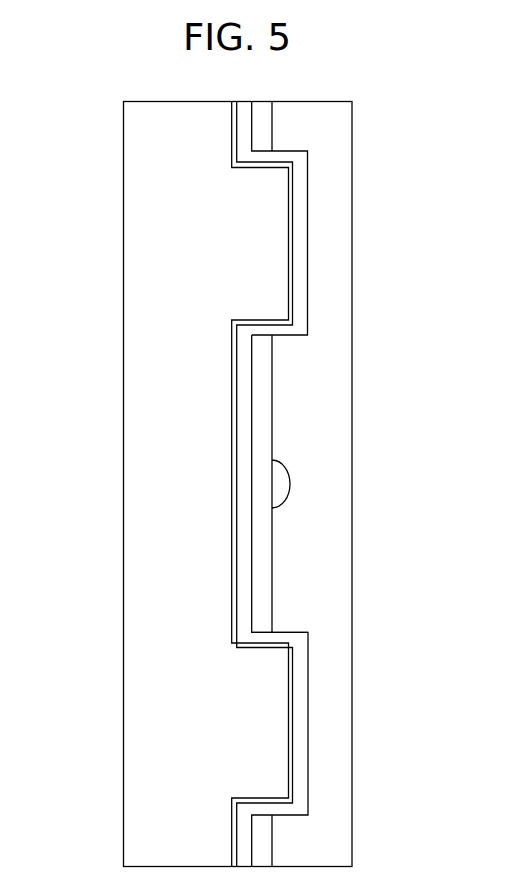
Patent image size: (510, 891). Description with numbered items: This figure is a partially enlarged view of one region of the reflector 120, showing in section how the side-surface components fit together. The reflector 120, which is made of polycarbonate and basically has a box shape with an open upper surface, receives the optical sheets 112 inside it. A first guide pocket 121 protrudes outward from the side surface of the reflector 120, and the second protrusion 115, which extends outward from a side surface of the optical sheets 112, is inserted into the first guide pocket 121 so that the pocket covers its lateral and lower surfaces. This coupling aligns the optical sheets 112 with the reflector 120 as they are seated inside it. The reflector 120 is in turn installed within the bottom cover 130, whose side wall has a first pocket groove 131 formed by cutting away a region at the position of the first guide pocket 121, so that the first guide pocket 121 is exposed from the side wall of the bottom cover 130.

The optical sheets 112 is at (152, 383).
The second protrusions 115 is at (268, 222).
The reflector 120 is at (243, 493).
The first guide pockets 121 is at (302, 285).
The bottom cover 130 is at (267, 548).
The first pocket grooves 131 is at (278, 625).